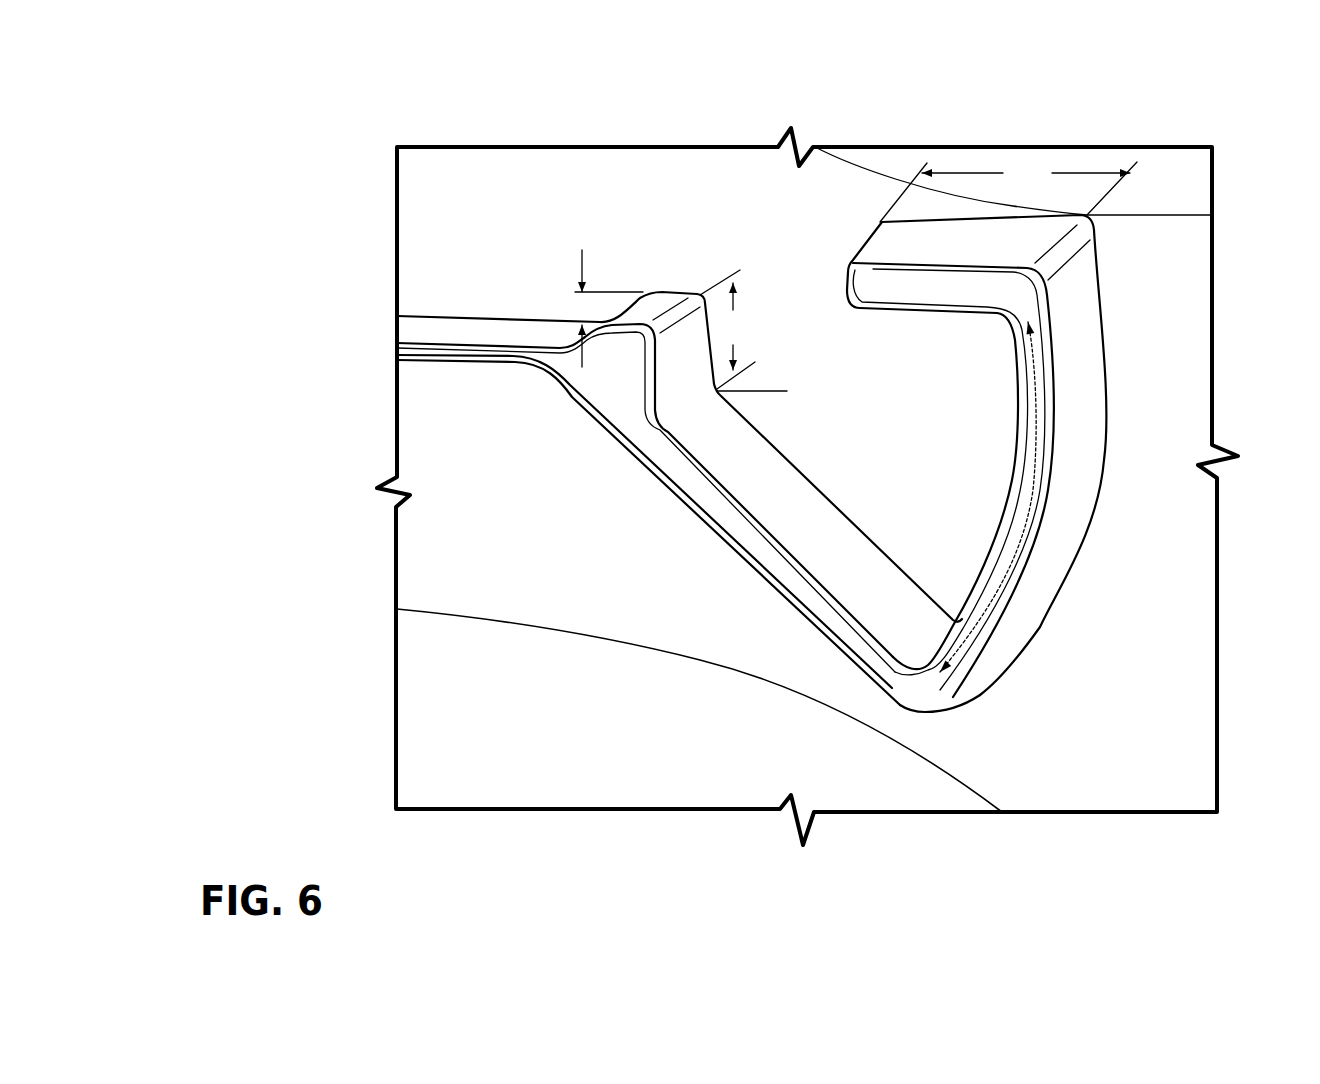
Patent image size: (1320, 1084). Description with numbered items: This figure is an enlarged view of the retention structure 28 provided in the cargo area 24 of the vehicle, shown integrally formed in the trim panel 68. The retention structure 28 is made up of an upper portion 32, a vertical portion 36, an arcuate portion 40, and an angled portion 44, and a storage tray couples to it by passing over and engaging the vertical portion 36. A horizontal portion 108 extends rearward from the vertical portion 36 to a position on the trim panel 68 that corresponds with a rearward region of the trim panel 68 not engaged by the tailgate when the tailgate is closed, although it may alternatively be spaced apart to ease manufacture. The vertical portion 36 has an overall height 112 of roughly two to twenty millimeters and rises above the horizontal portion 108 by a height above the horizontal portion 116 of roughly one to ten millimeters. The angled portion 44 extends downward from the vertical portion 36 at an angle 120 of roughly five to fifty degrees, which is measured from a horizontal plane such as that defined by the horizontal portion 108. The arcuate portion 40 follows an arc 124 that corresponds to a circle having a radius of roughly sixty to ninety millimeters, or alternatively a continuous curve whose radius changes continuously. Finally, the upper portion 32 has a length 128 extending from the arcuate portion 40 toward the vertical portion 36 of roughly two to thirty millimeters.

The cargo area 24 is at (336, 312).
The retention structure 28 is at (984, 699).
The upper portion 32 is at (860, 280).
The vertical portion 36 is at (630, 360).
The arcuate portion 40 is at (1073, 434).
The angled portion 44 is at (692, 487).
The trim panel 68 is at (1168, 272).
The horizontal portion 108 is at (466, 333).
The overall height 112 is at (729, 329).
The height above the horizontal portion 116 is at (582, 268).
The angle 120 is at (760, 435).
The arc 124 is at (1027, 503).
The length 128 is at (1008, 192).